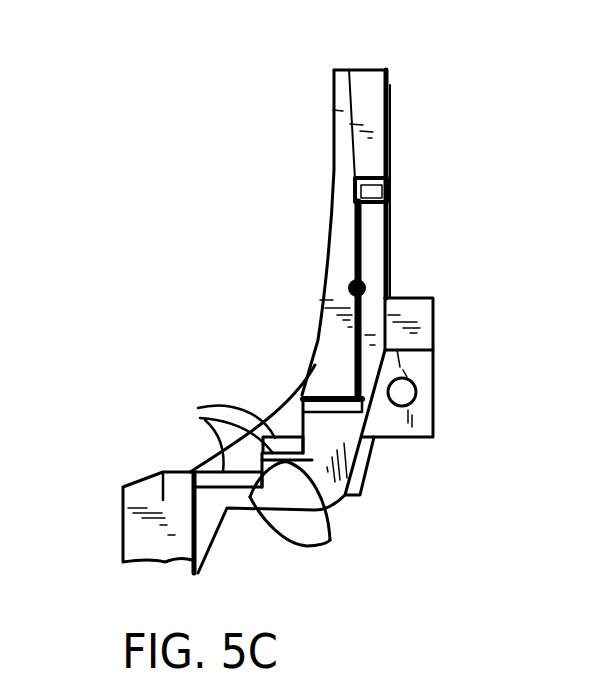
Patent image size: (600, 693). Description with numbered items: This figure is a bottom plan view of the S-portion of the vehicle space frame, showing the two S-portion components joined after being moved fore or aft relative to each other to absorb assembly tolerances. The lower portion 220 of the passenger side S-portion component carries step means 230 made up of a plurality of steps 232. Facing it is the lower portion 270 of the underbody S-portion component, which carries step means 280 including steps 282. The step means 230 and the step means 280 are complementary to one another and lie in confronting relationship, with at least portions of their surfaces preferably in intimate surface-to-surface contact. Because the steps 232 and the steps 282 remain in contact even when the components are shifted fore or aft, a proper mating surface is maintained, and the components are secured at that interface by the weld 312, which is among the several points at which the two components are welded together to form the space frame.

The lower portion 220 is at (337, 245).
The step means 230 is at (271, 382).
The steps 232 is at (200, 417).
The lower portion 270 is at (414, 199).
The step means 280 is at (347, 430).
The steps 282 is at (322, 516).
The weld 312 is at (360, 283).